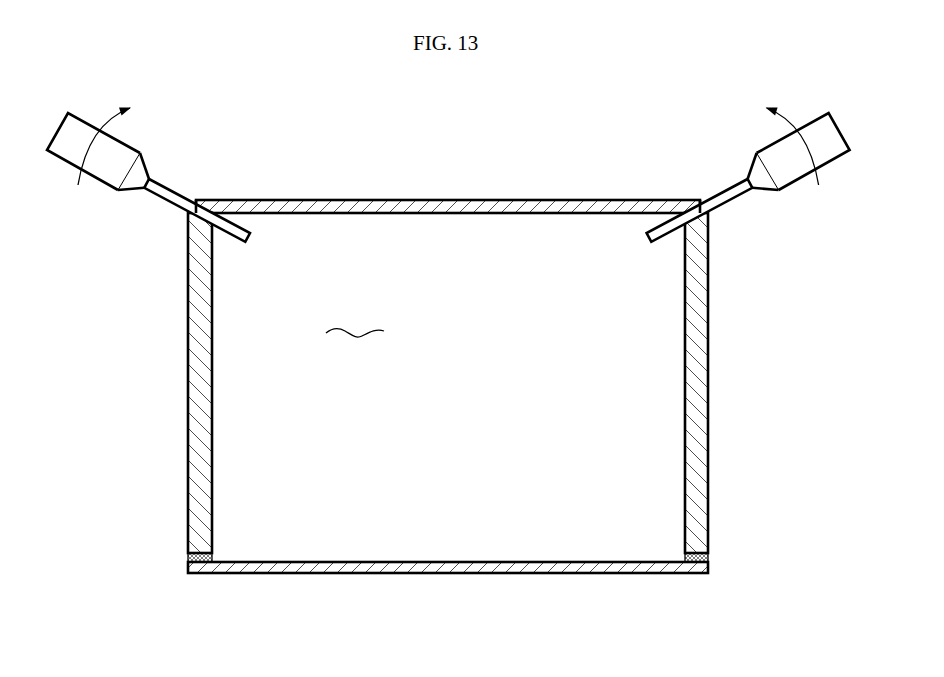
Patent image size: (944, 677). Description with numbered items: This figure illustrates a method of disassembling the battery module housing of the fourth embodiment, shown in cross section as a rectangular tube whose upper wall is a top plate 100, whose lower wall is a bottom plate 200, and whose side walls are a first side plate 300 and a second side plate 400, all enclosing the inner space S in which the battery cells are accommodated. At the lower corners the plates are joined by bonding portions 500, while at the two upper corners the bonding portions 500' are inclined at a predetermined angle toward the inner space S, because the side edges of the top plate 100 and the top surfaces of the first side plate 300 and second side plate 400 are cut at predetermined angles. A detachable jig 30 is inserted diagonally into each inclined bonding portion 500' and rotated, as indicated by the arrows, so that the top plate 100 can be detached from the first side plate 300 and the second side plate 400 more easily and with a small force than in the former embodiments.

The detachable jig 30 is at (103, 131).
The top plate 100 is at (587, 200).
The bottom plate 200 is at (587, 574).
The first side plate 300 is at (712, 385).
The second side plate 400 is at (188, 385).
The bonding portion 500 is at (447, 558).
The inclined bonding portion 500' is at (449, 185).
The inner space S is at (350, 327).